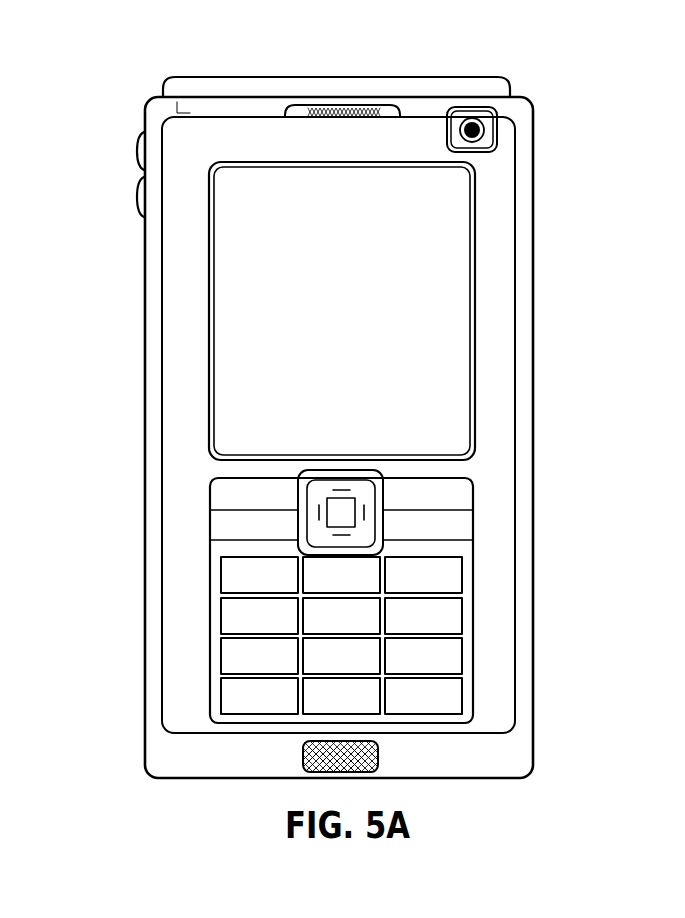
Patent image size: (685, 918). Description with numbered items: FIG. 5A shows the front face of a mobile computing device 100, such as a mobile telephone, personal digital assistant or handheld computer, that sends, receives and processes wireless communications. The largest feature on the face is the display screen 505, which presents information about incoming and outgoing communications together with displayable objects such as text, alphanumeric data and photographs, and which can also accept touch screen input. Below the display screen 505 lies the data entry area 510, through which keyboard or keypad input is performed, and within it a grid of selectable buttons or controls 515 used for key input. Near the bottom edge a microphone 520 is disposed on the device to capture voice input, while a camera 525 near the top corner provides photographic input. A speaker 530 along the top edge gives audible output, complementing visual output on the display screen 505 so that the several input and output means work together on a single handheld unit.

The mobile device 100 is at (138, 101).
The display screen 505 is at (243, 296).
The data entry area 510 is at (210, 521).
The selectable buttons or controls 515 is at (232, 615).
The microphone 520 is at (303, 758).
The camera 525 is at (497, 138).
The speaker 530 is at (385, 103).